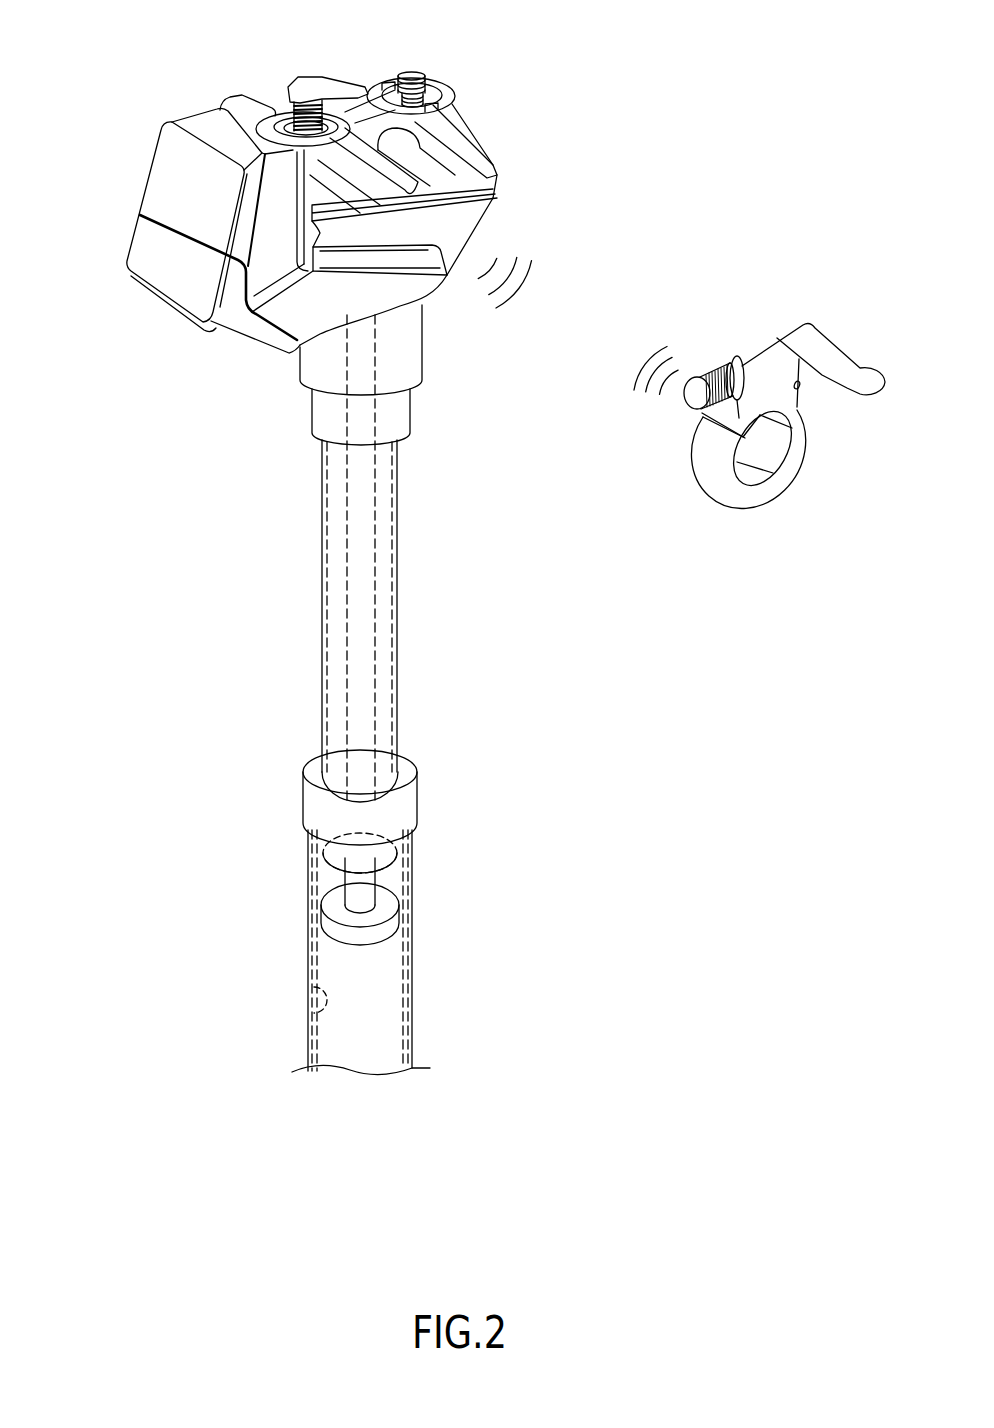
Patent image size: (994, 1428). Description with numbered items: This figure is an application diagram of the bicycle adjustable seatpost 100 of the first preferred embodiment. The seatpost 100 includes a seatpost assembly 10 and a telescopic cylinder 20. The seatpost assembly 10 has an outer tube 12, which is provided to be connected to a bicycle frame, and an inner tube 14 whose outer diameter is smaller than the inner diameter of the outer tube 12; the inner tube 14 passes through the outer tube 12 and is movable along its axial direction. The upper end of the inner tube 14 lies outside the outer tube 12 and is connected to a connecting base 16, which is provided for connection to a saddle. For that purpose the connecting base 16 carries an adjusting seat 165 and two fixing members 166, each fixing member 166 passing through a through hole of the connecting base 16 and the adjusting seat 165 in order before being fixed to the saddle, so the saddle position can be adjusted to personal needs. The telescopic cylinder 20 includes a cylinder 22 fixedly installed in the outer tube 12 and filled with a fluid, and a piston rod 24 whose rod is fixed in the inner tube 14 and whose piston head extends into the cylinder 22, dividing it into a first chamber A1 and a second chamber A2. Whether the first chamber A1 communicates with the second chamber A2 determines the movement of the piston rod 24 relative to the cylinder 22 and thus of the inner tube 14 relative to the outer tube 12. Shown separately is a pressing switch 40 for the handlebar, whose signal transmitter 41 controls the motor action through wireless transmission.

The bicycle adjustable seatpost 100 is at (648, 133).
The seatpost assembly 10 is at (197, 668).
The outer tube 12 is at (303, 862).
The inner tube 14 is at (318, 720).
The connecting base 16 is at (146, 141).
The adjusting seat 165 is at (443, 147).
The fixing members 166 is at (291, 89).
The telescopic cylinder 20 is at (190, 948).
The cylinder 22 is at (314, 1012).
The piston rod 24 is at (330, 912).
The pressing switch 40 is at (826, 355).
The signal transmitter 41 is at (712, 370).
The first chamber A1 is at (397, 873).
The second chamber A2 is at (394, 1007).